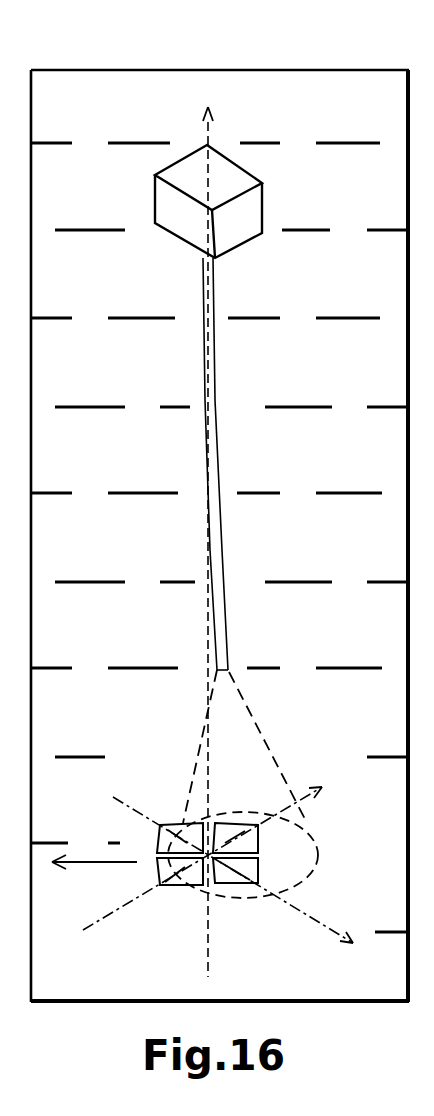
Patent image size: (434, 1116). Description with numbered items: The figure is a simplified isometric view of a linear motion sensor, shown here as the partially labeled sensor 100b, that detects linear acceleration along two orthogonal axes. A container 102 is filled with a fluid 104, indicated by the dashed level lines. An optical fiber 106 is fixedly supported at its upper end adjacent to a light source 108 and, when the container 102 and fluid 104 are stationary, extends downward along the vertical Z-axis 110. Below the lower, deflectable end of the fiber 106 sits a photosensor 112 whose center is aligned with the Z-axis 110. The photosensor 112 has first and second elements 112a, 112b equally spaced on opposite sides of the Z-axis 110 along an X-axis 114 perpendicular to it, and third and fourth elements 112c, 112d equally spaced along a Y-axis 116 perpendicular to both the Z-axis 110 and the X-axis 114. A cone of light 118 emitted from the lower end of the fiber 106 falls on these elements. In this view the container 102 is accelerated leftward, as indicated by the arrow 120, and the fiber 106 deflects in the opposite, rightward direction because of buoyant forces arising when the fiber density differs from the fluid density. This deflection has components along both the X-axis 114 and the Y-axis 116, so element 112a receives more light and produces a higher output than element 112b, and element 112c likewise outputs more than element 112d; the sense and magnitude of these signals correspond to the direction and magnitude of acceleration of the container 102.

The apparatus (partial label) 100b is at (390, 0).
The container 102 is at (312, 70).
The fluid 104 is at (113, 194).
The optical fiber 106 is at (218, 460).
The light source 108 is at (250, 215).
The Z-axis 110 is at (209, 139).
The photosensor 112 is at (219, 830).
The first element 112a is at (258, 870).
The second element 112b is at (157, 840).
The third element 112c is at (258, 833).
The fourth element 112d is at (176, 885).
The X-axis 114 is at (286, 898).
The Y-axis 116 is at (299, 787).
The cone of light 118 is at (246, 703).
The arrow 120 is at (92, 864).